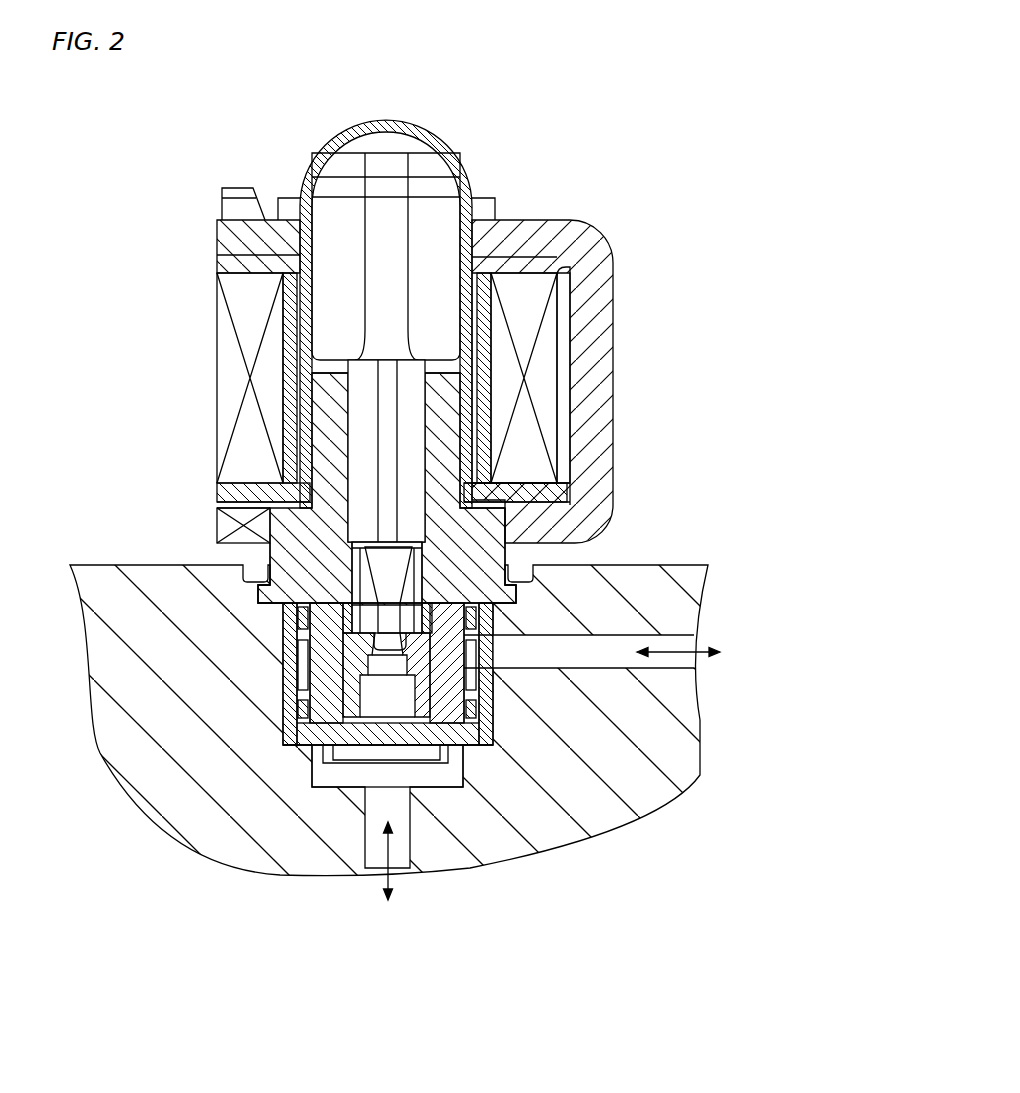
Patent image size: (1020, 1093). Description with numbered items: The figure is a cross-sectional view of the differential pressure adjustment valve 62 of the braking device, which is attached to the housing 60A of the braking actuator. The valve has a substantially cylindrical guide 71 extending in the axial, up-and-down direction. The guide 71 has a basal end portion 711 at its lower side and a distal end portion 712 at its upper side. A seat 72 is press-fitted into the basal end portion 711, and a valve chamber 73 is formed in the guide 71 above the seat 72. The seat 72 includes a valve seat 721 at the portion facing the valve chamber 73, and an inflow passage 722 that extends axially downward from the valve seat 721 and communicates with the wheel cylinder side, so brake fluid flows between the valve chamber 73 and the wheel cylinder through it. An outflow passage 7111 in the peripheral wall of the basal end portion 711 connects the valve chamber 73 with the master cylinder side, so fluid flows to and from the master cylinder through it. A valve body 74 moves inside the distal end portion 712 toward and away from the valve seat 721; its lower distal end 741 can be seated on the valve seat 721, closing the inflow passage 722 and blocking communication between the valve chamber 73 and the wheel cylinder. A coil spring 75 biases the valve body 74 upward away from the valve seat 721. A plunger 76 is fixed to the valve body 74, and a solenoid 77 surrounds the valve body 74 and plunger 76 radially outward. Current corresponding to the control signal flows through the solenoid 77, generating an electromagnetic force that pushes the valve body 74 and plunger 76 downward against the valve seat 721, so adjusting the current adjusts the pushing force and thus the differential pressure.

The differential pressure adjustment valve 62 is at (644, 170).
The housing 60A is at (703, 565).
The guide 71 is at (304, 509).
The basal end portion 711 is at (276, 645).
The distal end portion 712 is at (218, 512).
The outflow passage 7111 is at (482, 640).
The seat 72 is at (407, 718).
The valve seat 721 is at (472, 748).
The inflow passage 722 is at (370, 697).
The valve chamber 73 is at (408, 612).
The valve body 74 is at (402, 578).
The distal end 741 is at (433, 698).
The coil spring 75 is at (262, 470).
The plunger 76 is at (313, 215).
The solenoid 77 is at (553, 378).